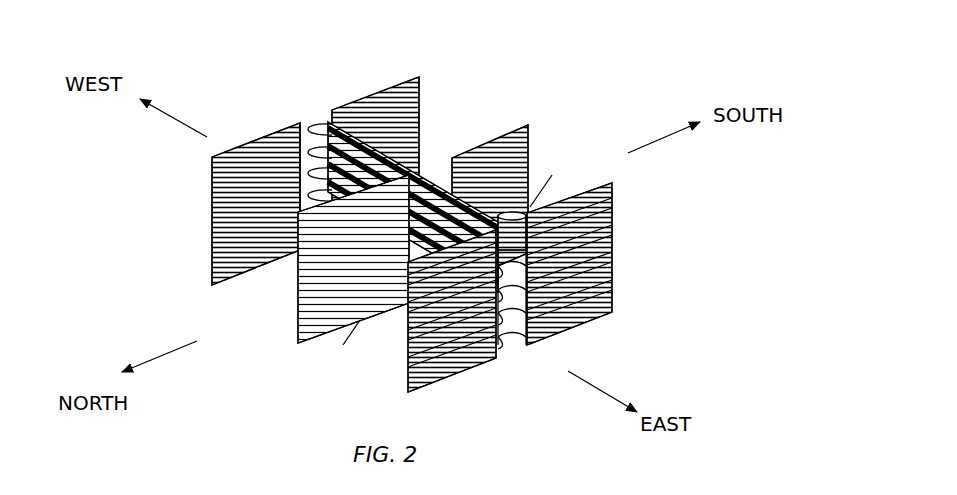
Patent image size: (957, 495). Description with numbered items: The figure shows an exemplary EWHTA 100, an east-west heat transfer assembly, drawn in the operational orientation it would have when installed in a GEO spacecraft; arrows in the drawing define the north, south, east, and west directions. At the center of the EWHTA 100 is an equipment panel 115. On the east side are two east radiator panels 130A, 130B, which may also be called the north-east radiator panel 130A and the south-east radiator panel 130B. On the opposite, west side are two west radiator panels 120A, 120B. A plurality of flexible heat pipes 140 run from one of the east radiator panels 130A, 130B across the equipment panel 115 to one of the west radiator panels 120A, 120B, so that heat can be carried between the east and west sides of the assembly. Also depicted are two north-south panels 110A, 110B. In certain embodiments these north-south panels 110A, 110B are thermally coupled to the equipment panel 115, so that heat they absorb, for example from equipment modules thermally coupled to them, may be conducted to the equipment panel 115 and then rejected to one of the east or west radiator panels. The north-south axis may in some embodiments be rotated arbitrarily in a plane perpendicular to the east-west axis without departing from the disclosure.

The EWHTA 100 is at (343, 48).
The north-south panel 110A is at (308, 288).
The north-south panel 110B is at (520, 157).
The equipment panel 115 is at (422, 197).
The west radiator panel 120A is at (258, 155).
The west radiator panel 120B is at (389, 98).
The north-east radiator panel 130A is at (457, 367).
The south-east radiator panel 130B is at (598, 317).
The flexible heat pipes 140 is at (312, 123).